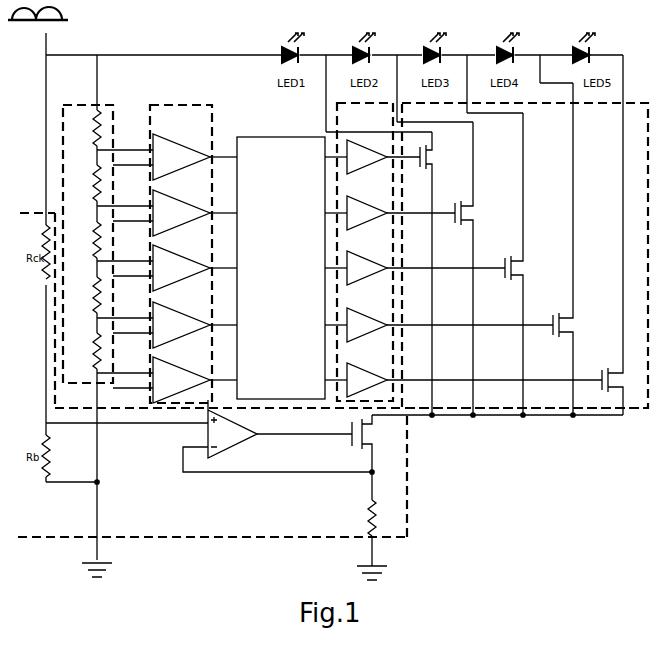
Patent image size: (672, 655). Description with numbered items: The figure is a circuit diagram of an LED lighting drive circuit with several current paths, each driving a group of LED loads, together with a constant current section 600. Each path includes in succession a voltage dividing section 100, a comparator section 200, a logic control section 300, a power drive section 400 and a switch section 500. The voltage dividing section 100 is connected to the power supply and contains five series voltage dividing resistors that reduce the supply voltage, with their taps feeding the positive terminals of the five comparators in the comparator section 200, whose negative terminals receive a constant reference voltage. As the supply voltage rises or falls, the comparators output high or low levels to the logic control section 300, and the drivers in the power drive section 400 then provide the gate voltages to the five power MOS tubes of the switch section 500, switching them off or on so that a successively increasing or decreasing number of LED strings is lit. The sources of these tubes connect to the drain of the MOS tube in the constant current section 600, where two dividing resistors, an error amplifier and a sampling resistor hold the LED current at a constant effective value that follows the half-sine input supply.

The voltage dividing section 100 is at (108, 307).
The comparator section 200 is at (193, 245).
The logic control section 300 is at (292, 259).
The power drive section 400 is at (365, 252).
The switch section 500 is at (510, 250).
The constant current section 600 is at (212, 490).